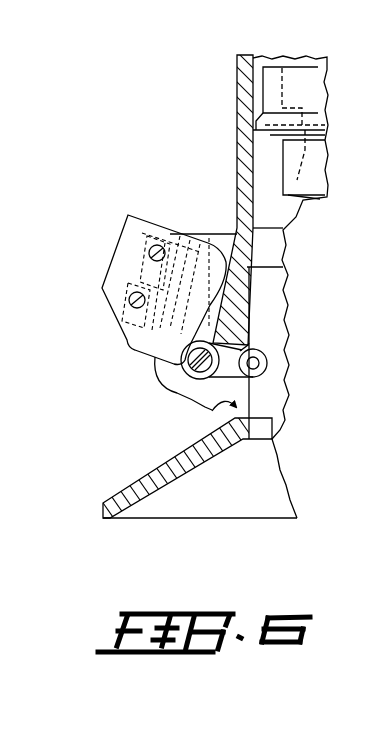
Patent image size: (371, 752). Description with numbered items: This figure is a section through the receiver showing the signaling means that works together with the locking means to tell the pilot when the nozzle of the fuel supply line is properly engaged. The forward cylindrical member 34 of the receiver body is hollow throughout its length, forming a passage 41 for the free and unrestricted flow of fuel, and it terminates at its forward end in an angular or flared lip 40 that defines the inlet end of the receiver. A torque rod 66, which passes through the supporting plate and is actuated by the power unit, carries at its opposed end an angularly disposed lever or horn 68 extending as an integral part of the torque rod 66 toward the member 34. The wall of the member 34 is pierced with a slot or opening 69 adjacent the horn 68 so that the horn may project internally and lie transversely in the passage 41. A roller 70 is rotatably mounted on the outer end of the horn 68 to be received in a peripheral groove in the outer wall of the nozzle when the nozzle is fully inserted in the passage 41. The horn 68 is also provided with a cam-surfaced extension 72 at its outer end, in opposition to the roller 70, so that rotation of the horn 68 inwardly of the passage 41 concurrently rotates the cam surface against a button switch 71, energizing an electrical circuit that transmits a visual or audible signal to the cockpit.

The forward cylindrical member 34 is at (245, 187).
The flared lip 40 is at (167, 474).
The passage 41 is at (265, 311).
The torque rod 66 is at (189, 377).
The horn 68 is at (213, 372).
The slot 69 is at (212, 411).
The roller 70 is at (266, 356).
The button switch 71 is at (160, 336).
The cam-surfaced extension 72 is at (182, 364).